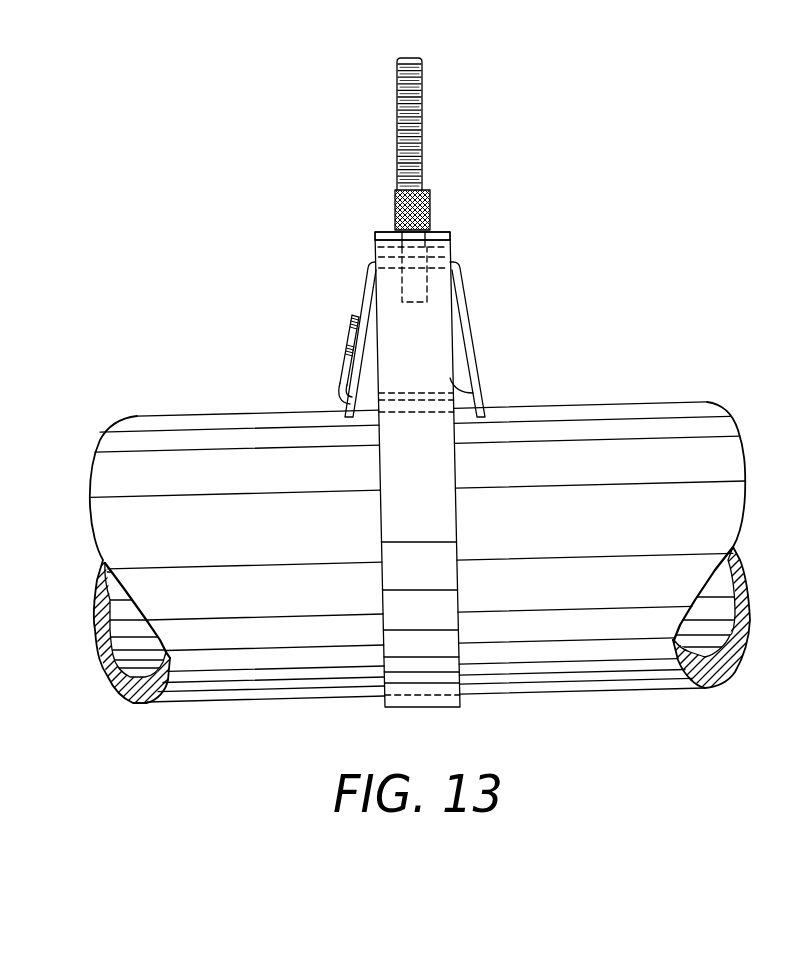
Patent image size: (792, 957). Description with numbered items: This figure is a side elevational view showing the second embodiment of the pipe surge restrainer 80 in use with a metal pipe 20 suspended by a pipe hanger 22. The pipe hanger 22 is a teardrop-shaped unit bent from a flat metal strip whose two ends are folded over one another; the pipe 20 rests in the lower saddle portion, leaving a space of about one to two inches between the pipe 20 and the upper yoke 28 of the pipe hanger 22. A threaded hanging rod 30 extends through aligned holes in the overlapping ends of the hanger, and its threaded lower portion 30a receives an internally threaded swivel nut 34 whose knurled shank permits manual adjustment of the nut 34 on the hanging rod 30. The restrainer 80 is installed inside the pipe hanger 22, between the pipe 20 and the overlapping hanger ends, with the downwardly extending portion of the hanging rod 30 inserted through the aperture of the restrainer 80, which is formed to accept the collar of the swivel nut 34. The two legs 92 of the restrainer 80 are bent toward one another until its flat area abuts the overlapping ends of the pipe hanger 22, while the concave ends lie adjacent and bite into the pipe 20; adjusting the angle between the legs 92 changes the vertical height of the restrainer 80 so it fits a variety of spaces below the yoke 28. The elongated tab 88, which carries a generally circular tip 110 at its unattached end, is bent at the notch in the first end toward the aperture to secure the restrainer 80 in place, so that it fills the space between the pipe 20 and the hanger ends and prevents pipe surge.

The pipe 20 is at (198, 432).
The pipe hanger 22 is at (397, 573).
The yoke 28 is at (447, 230).
The hanging rod 30 is at (420, 58).
The lower portion of the hanging rod 30a is at (425, 288).
The swivel nut 34 is at (392, 203).
The pipe surge restrainer 80 is at (523, 308).
The tab 88 is at (340, 365).
The legs 92 is at (338, 404).
The circular tip 110 is at (352, 327).